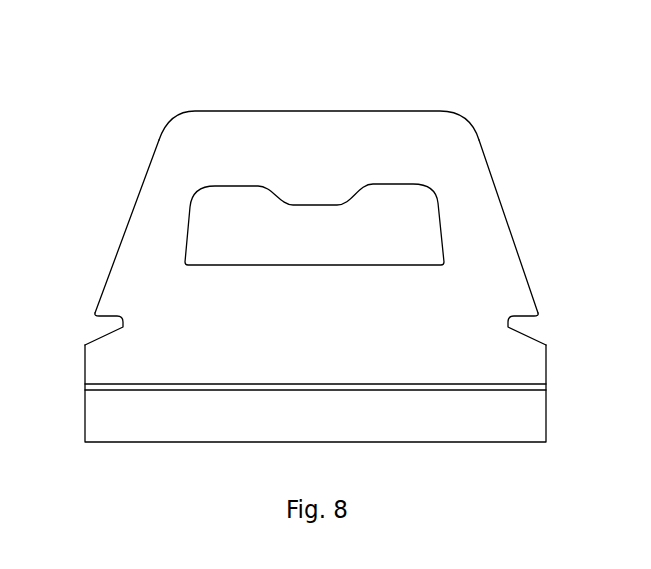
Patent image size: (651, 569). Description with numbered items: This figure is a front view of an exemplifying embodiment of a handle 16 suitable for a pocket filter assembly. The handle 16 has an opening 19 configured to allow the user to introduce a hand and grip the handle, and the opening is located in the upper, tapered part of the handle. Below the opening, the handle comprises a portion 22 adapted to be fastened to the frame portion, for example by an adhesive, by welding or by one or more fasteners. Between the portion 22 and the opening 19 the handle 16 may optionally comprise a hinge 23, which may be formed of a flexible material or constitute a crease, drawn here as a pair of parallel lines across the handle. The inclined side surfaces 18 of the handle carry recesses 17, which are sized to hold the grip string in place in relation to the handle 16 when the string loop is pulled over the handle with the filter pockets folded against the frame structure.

The handle 16 is at (522, 95).
The recesses 17 is at (112, 322).
The side surfaces 18 is at (127, 220).
The opening 19 is at (328, 240).
The portion 22 is at (375, 428).
The hinge 23 is at (315, 387).